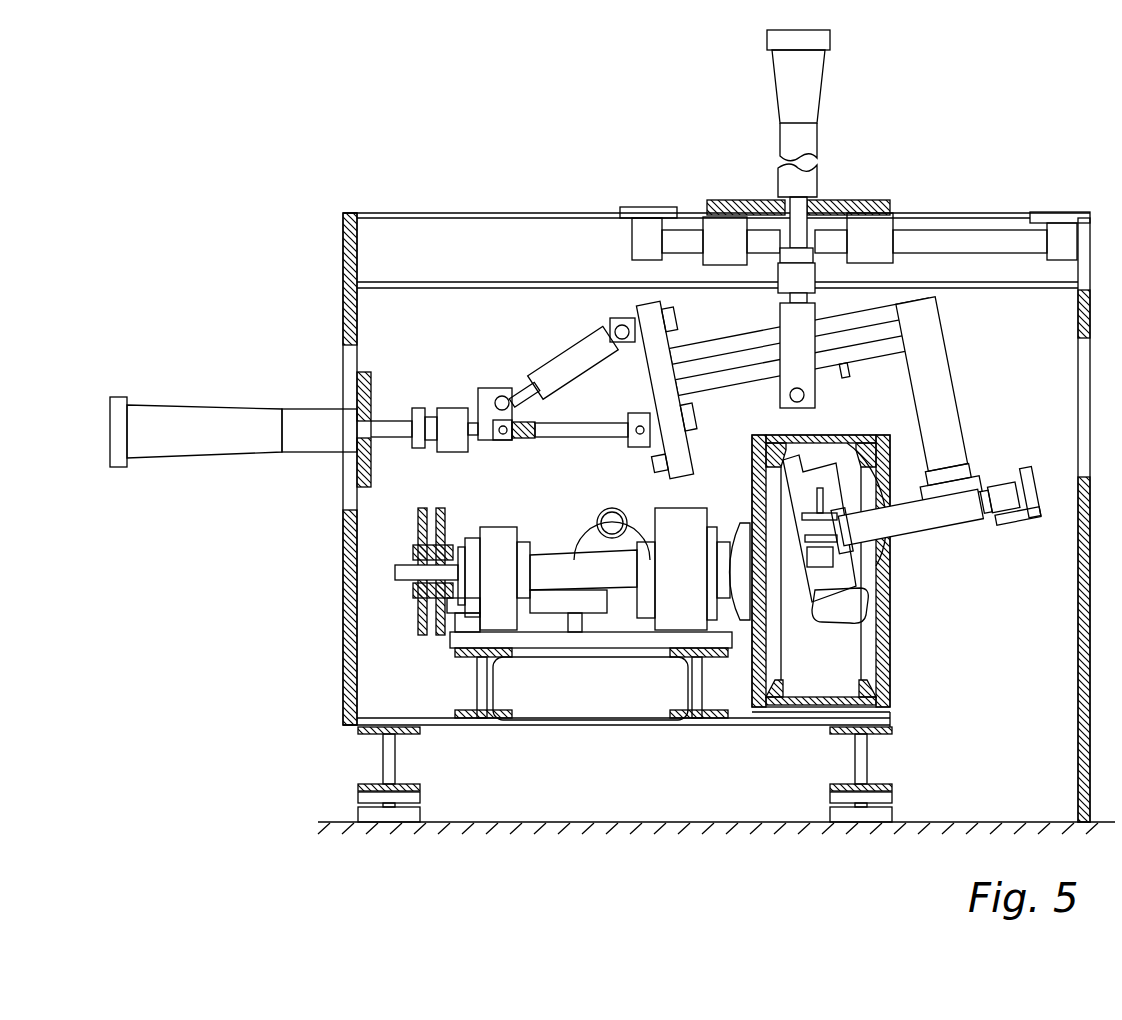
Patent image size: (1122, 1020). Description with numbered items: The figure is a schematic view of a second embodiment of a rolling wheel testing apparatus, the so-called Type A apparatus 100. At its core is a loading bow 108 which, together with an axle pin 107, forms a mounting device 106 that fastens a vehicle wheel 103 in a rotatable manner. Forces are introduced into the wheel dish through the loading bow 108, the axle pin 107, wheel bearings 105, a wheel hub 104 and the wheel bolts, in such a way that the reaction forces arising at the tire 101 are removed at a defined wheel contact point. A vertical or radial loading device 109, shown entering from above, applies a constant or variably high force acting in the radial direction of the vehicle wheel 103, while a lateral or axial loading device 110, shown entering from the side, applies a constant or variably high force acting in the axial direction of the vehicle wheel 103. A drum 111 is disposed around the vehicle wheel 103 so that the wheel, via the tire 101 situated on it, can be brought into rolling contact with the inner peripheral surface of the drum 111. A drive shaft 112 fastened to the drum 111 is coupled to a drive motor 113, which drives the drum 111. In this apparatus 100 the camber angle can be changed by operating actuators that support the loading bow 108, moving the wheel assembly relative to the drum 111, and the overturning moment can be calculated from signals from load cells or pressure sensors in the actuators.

The apparatus 100 is at (1042, 184).
The tire 101 is at (868, 600).
The vehicle wheel 103 is at (844, 640).
The wheel hub 104 is at (845, 560).
The wheel bearings 105 is at (836, 462).
The mounting device 106 is at (989, 465).
The axle pin 107 is at (955, 510).
The loading bow 108 is at (922, 320).
The vertical or radial loading device 109 is at (797, 93).
The lateral or axial loading device 110 is at (177, 440).
The drum 111 is at (808, 702).
The drive shaft 112 is at (741, 556).
The drive motor 113 is at (570, 692).